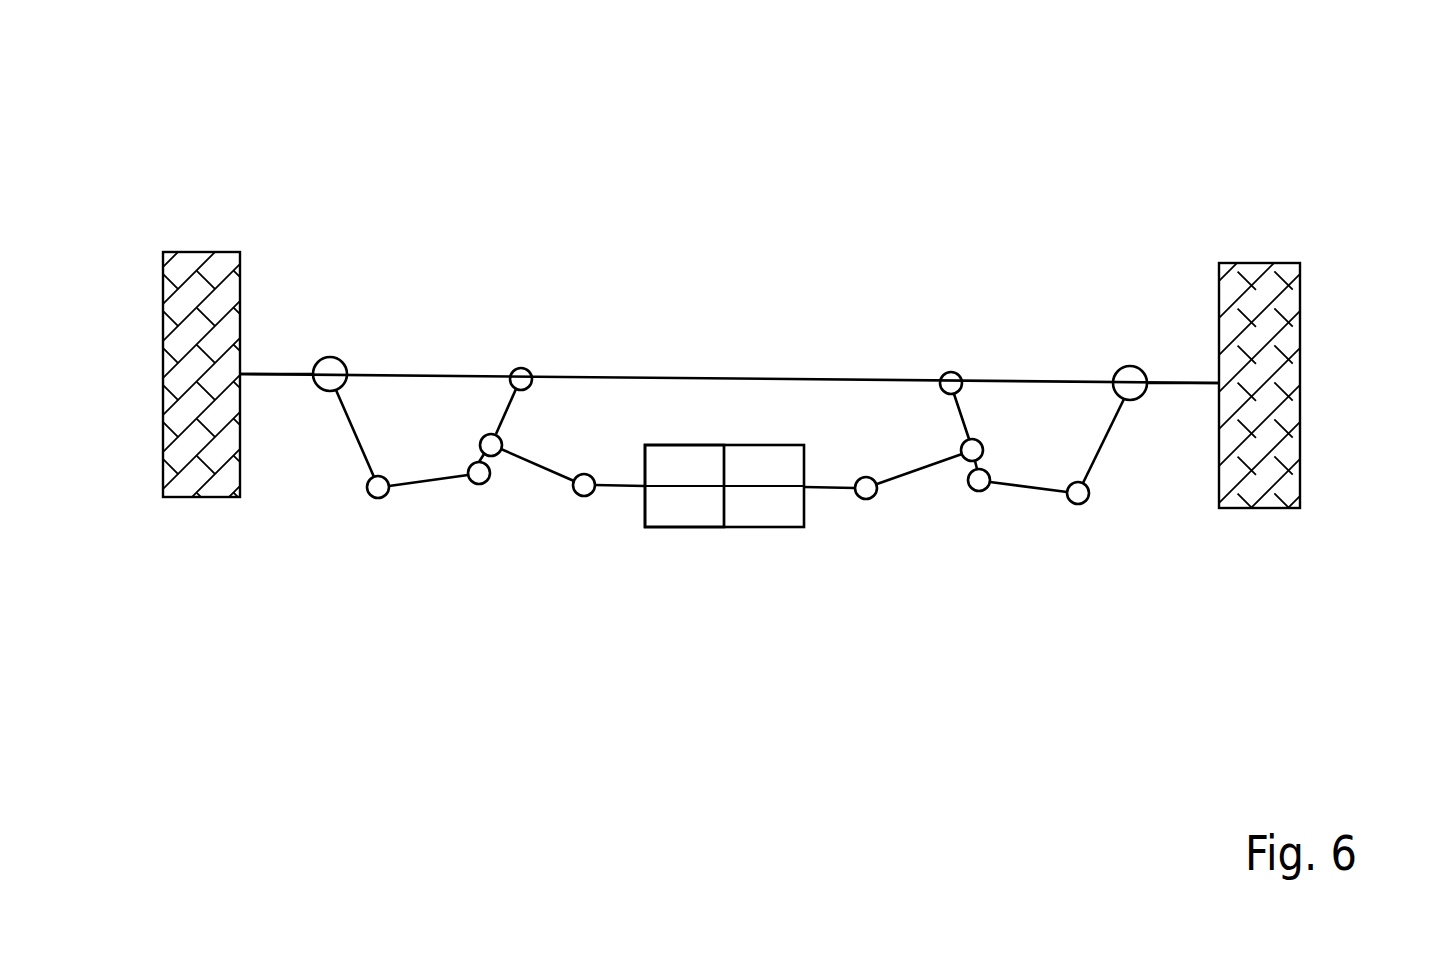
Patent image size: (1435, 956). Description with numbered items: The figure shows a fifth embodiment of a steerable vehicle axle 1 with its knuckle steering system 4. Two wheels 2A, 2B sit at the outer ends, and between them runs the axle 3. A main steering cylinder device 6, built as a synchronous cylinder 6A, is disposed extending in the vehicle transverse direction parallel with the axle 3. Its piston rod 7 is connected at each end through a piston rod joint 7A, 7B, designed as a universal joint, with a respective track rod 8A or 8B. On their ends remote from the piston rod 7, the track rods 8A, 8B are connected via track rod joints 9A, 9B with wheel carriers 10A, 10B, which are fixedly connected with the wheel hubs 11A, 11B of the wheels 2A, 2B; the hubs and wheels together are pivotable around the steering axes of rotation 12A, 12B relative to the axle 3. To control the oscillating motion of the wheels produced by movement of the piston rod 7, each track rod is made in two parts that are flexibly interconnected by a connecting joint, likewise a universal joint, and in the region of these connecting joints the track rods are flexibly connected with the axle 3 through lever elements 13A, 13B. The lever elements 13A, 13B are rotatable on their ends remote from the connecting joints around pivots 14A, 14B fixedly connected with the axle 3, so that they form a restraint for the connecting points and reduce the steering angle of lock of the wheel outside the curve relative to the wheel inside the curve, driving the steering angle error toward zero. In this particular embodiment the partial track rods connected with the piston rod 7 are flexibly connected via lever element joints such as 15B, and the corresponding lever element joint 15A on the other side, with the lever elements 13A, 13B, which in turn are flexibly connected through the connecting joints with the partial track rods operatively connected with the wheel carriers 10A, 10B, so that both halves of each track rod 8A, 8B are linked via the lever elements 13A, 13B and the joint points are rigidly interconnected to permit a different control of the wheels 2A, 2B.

The vehicle axle 1 is at (188, 147).
The wheel 2A is at (190, 350).
The wheel 2B is at (1273, 365).
The axle 3 is at (772, 377).
The knuckle steering system 4 is at (731, 564).
The main steering cylinder device 6 is at (724, 564).
The synchronous cylinder 6A is at (708, 505).
The piston rod 7 is at (818, 490).
The piston rod joint 7A is at (584, 497).
The piston rod joint 7B is at (868, 500).
The track rod 8A is at (511, 416).
The track rod 8B is at (913, 422).
The track rod joint 9A is at (367, 491).
The track rod joint 9B is at (1092, 500).
The wheel carrier 10A is at (352, 437).
The wheel carrier 10B is at (1101, 447).
The wheel hub 11A is at (256, 371).
The wheel hub 11B is at (1172, 378).
The steering axis of rotation 12A is at (330, 357).
The steering axis of rotation 12B is at (1127, 367).
The lever element 13A is at (528, 450).
The lever element 13B is at (963, 441).
The pivot 14A is at (522, 368).
The pivot 14B is at (947, 375).
The left connecting link 15A is at (503, 457).
The lever element joint 15B is at (962, 462).